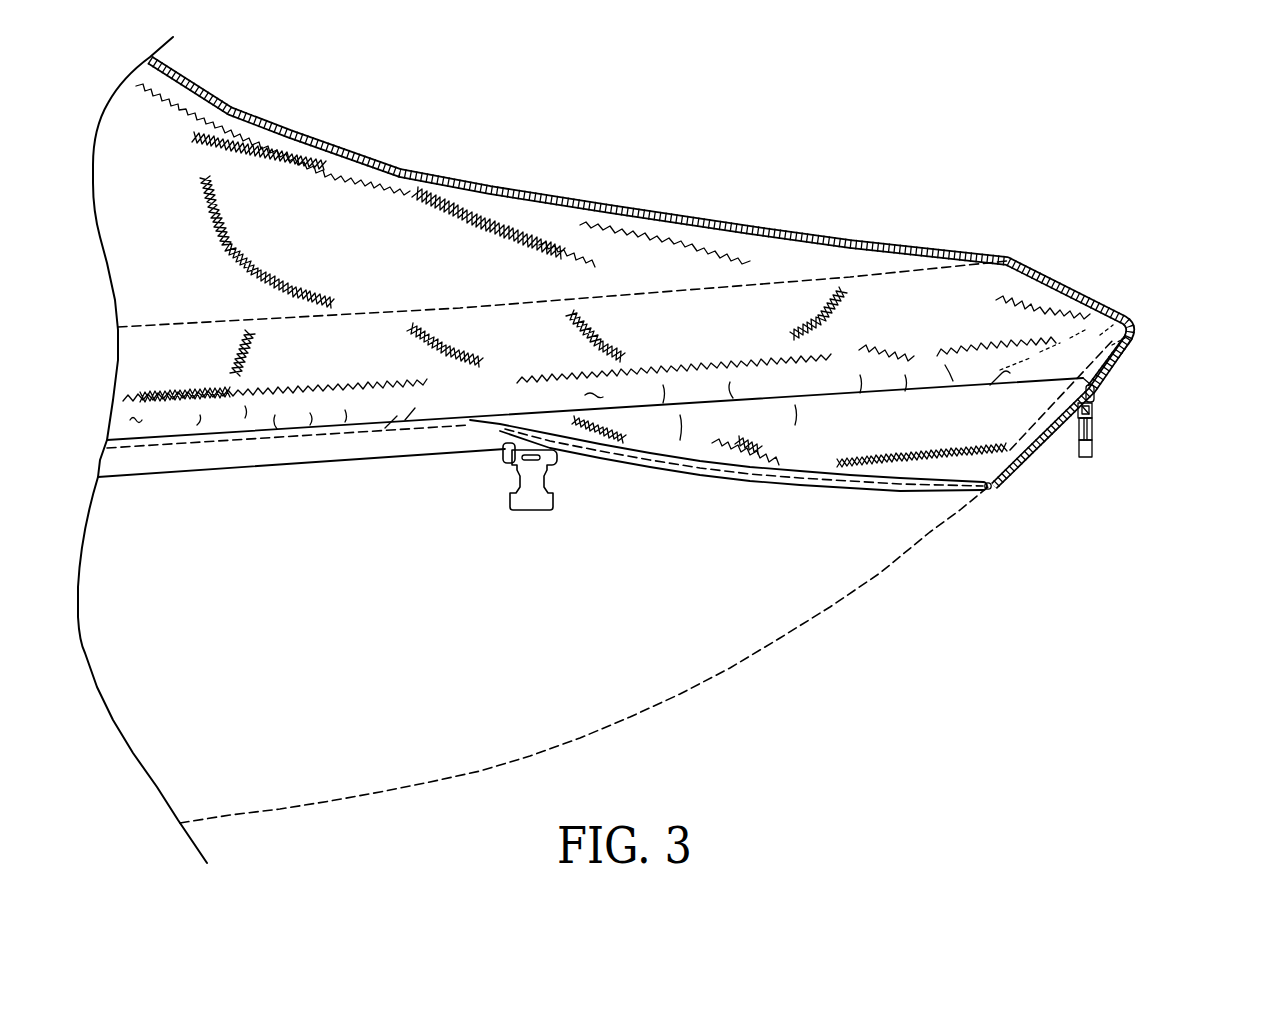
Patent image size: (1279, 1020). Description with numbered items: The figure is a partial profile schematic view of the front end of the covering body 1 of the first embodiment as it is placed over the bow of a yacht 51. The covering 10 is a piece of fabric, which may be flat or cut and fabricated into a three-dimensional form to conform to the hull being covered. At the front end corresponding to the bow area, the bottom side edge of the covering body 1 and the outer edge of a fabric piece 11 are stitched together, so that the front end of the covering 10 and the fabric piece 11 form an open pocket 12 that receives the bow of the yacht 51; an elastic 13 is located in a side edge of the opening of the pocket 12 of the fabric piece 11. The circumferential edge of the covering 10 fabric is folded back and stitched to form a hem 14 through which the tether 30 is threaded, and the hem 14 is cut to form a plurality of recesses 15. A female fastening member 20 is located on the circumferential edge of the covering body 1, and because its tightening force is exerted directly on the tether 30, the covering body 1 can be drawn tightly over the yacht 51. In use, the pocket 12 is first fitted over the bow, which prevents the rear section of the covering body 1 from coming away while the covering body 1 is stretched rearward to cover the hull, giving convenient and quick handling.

The covering body 1 is at (1127, 191).
The covering 10 is at (1040, 274).
The fabric piece 11 is at (1043, 440).
The pocket 12 is at (937, 468).
The elastic 13 is at (985, 493).
The hem 14 is at (252, 460).
The recess 15 is at (1093, 400).
The female fastening member 20 is at (535, 500).
The tether 30 is at (503, 455).
The yacht 51 is at (880, 275).